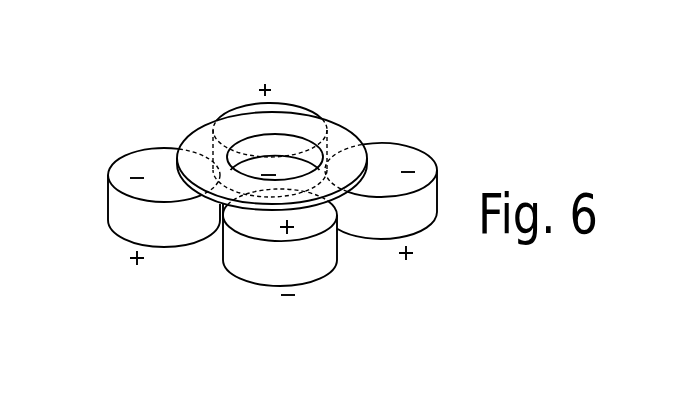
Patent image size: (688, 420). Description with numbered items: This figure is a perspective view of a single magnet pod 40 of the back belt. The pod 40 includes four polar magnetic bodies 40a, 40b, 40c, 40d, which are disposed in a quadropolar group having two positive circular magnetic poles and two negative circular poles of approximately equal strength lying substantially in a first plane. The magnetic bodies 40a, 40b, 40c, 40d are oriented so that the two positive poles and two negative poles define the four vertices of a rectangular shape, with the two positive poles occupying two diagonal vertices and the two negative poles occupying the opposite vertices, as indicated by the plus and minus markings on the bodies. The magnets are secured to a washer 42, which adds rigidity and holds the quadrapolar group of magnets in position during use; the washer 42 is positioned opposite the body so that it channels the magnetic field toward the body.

The pod 40 is at (357, 86).
The polar magnetic body 40a is at (108, 193).
The polar magnetic body 40b is at (233, 110).
The polar magnetic body 40c is at (327, 268).
The polar magnetic body 40d is at (392, 142).
The washer 42 is at (328, 120).